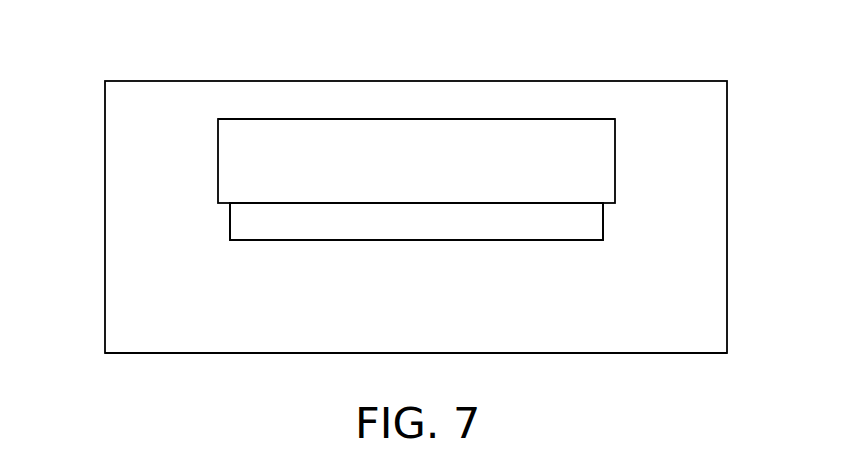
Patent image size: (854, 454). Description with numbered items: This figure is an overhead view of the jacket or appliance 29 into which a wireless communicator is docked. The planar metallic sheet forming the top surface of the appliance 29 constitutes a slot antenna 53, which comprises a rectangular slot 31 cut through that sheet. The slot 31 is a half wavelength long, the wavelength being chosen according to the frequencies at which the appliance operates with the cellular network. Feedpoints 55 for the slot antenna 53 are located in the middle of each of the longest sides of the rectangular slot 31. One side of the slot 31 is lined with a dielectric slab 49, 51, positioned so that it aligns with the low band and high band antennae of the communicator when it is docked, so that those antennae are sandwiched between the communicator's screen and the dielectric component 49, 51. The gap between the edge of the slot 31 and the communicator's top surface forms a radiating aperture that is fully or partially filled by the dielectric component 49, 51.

The appliance 29 is at (104, 174).
The slot 31 is at (595, 155).
The dielectric slab 49 is at (603, 221).
The dielectric slab 51 is at (416, 221).
The slot antenna 53 is at (295, 332).
The feedpoints 55 is at (360, 119).